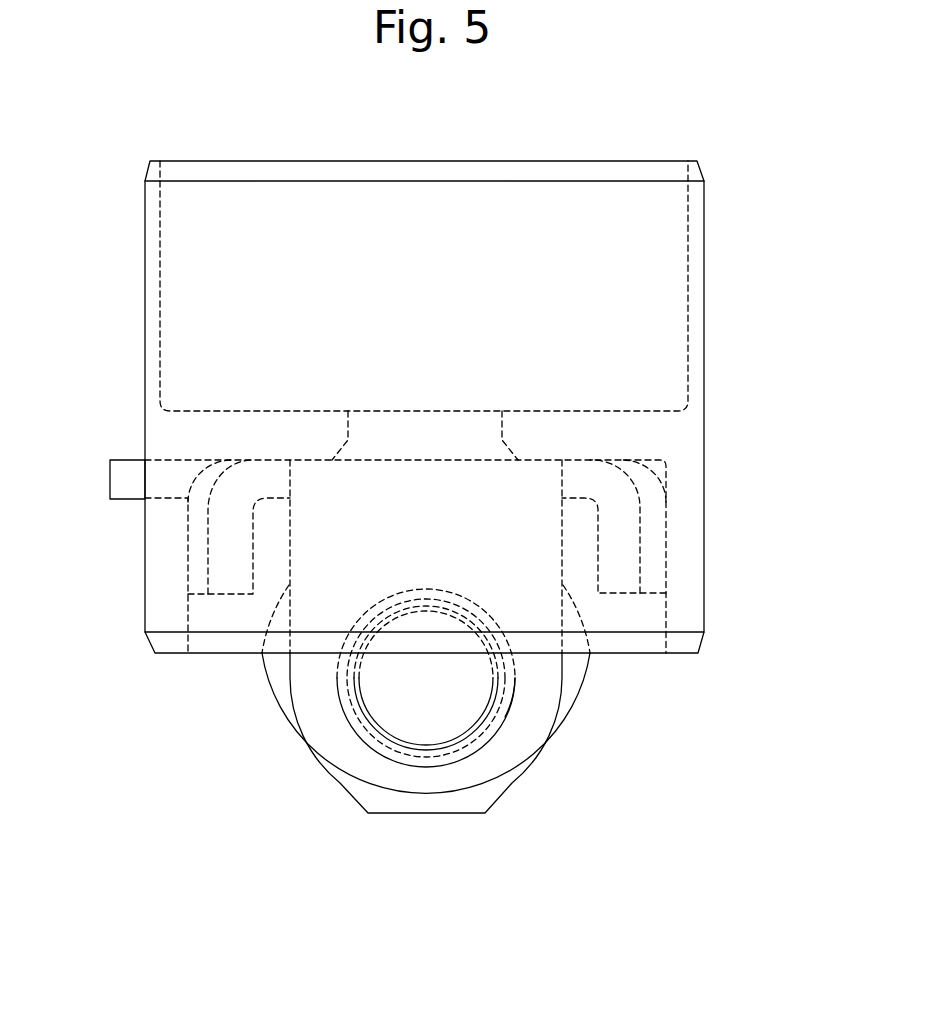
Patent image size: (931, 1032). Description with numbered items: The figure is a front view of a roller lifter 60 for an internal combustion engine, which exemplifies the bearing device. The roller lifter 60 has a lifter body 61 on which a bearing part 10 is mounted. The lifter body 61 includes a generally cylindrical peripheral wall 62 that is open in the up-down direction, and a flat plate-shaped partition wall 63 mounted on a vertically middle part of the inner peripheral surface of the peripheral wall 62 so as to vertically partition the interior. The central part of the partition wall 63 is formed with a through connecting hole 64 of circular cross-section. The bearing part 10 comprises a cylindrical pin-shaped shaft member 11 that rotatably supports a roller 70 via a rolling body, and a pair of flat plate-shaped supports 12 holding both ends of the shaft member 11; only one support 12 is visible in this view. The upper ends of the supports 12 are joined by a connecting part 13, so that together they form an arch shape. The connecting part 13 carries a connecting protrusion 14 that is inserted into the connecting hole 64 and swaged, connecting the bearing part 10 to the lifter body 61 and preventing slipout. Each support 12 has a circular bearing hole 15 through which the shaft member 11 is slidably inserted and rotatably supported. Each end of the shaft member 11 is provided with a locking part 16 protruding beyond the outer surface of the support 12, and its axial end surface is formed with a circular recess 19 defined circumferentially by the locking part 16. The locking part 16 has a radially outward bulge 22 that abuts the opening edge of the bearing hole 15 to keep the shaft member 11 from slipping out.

The roller lifter 60 is at (434, 162).
The lifter body 61 is at (700, 249).
The peripheral wall 62 is at (690, 453).
The partition wall 63 is at (592, 411).
The connecting hole 64 is at (365, 412).
The connecting protrusion 14 is at (403, 420).
The connecting part 13 is at (283, 500).
The bearing part 10 is at (271, 693).
The roller 70 is at (430, 830).
The support 12 is at (547, 692).
The locking part 16 is at (345, 695).
The bulge 22 is at (348, 717).
The bearing hole 15 is at (368, 743).
The recess 19 is at (463, 736).
The shaft member 11 is at (505, 717).